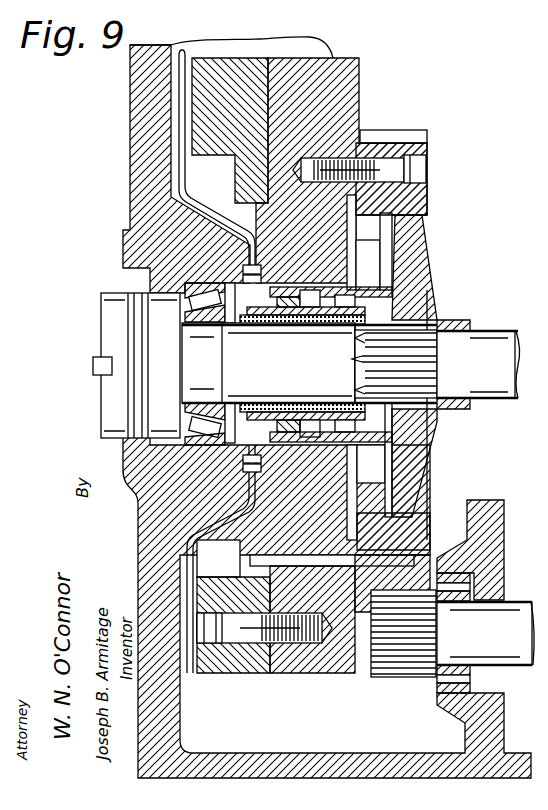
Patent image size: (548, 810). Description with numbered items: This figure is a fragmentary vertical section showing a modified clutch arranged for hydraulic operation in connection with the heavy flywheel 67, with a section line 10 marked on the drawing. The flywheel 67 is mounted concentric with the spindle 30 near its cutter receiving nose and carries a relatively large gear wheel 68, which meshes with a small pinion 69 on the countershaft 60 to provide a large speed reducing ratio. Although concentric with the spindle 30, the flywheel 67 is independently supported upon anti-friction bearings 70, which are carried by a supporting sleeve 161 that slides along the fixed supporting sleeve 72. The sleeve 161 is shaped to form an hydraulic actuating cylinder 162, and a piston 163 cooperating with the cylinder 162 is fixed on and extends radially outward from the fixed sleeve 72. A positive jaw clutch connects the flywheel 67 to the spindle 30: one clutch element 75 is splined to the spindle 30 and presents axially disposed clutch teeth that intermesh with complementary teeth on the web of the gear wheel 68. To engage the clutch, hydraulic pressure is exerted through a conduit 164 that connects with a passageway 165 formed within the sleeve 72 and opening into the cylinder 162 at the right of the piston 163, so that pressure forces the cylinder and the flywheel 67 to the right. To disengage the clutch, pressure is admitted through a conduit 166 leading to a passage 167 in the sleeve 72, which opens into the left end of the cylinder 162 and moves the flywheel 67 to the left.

The section line indicator 10 is at (410, 213).
The spindle 30 is at (108, 328).
The countershaft 60 is at (514, 601).
The flywheel 67 is at (359, 88).
The gear wheel 68 is at (378, 133).
The pinion 69 is at (401, 679).
The anti-friction bearings 70 is at (294, 290).
The supporting sleeve 72 is at (286, 330).
The clutch element 75 is at (425, 450).
The supporting sleeve 161 is at (338, 432).
The hydraulic actuating cylinder 162 is at (330, 286).
The piston 163 is at (336, 425).
The conduit 164 is at (204, 204).
The passageway 165 is at (246, 284).
The conduit 166 is at (192, 675).
The passage 167 is at (296, 420).